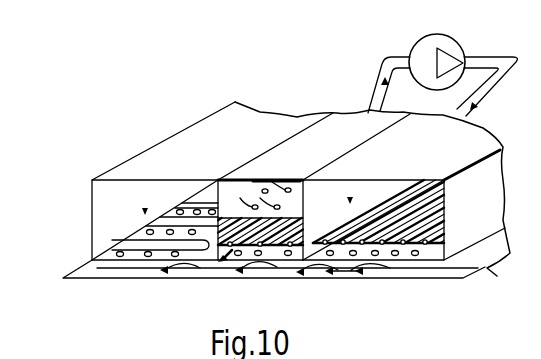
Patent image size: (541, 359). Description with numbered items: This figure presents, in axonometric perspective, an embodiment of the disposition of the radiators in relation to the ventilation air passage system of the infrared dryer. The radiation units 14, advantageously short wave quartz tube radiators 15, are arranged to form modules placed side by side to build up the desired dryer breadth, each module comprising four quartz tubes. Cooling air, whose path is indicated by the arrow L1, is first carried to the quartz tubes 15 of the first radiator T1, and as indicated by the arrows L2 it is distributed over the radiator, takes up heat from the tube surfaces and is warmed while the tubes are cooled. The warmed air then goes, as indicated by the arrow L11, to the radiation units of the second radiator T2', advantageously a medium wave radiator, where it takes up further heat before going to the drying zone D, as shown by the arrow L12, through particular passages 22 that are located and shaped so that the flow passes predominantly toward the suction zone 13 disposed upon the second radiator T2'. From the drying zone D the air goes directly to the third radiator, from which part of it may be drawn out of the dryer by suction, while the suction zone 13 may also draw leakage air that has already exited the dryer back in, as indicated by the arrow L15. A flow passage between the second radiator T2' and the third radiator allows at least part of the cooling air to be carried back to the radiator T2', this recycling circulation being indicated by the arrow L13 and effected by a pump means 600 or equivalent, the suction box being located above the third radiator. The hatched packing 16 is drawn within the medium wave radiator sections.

The pump means 600 is at (452, 41).
The suction zone 13 is at (268, 160).
The drying zone D is at (337, 103).
The first radiator T1 is at (185, 168).
The second radiator T2' is at (288, 180).
The short wave quartz tube radiators 15 is at (148, 210).
The radiation units 14 is at (103, 243).
The passages 22 is at (148, 257).
The packing / fill 16 is at (345, 232).
The air path arrow L1 is at (145, 210).
The air distribution arrows L2 is at (383, 212).
The air flow arrow to second radiator L11 is at (163, 272).
The air flow arrow to drying zone L12 is at (510, 100).
The recycling circulation arrow L13 is at (293, 277).
The leakage air return arrow L15 is at (418, 270).